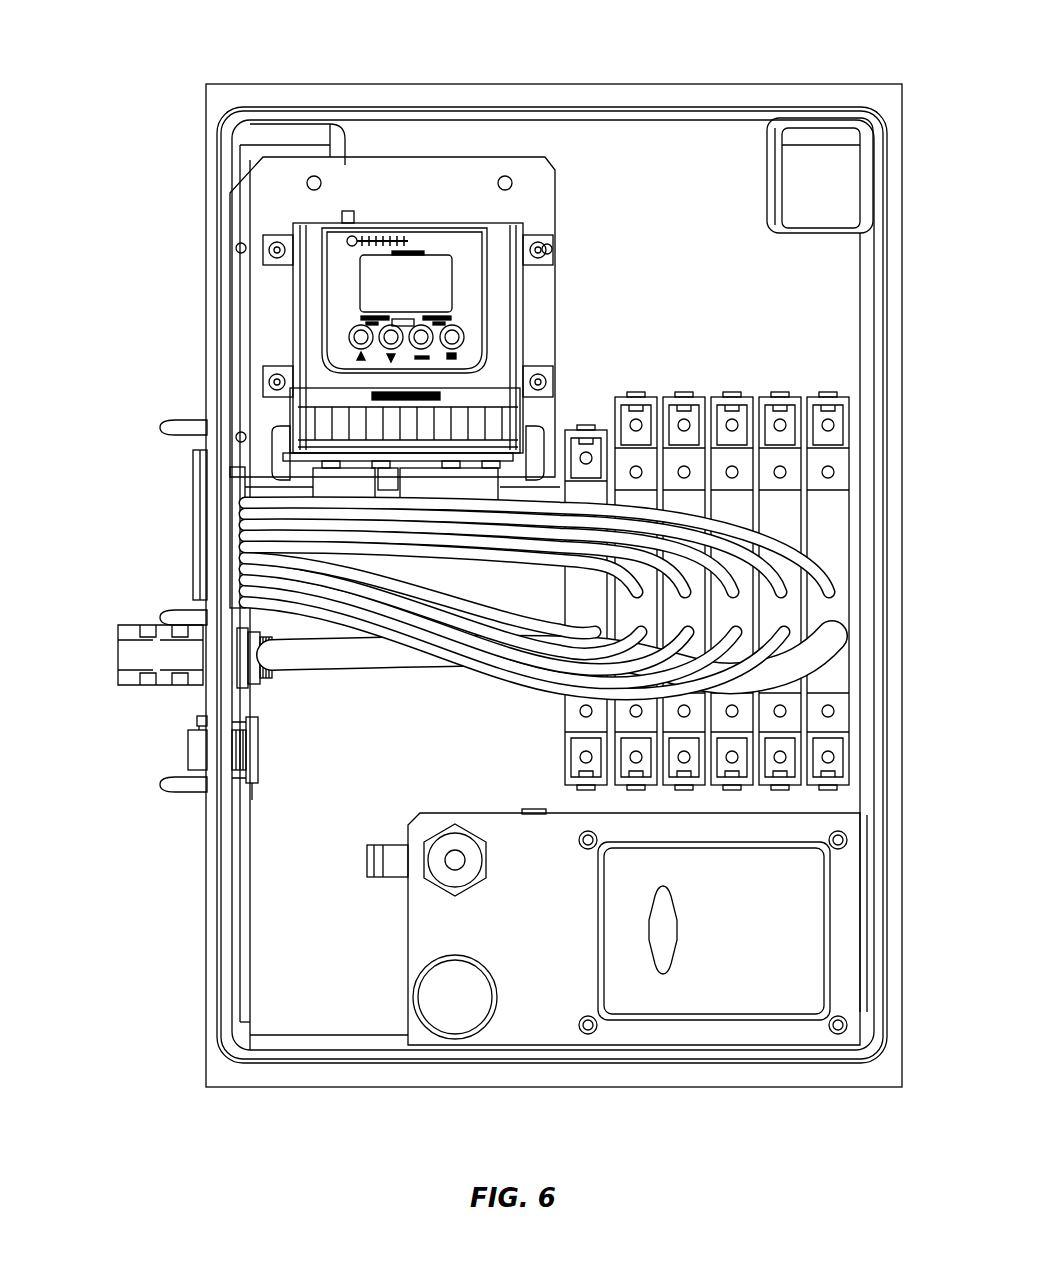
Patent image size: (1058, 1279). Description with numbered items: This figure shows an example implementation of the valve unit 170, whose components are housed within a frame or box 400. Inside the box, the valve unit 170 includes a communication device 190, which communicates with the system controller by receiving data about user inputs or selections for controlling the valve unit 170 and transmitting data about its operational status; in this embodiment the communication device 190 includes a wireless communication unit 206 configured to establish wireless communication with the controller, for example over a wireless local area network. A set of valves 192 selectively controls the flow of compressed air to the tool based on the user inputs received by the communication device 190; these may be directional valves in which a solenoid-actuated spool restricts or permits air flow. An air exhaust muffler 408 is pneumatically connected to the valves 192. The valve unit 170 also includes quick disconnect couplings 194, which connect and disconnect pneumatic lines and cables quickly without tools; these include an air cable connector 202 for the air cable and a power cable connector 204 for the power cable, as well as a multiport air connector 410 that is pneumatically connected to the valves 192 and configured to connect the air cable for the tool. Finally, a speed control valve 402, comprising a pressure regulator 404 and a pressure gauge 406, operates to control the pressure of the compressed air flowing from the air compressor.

The valve unit 170 is at (122, 58).
The communication device 190 is at (408, 255).
The wireless communication unit 206 is at (383, 275).
The frame or box 400 is at (776, 100).
The multiport air connector 410 is at (178, 490).
The valves 192 is at (840, 482).
The air exhaust muffler 408 is at (113, 640).
The quick disconnect couplings 194 is at (148, 734).
The air cable connector 202 is at (196, 718).
The power cable connector 204 is at (186, 753).
The pressure regulator 404 is at (422, 858).
The pressure gauge 406 is at (405, 997).
The speed control valve 402 is at (663, 1022).